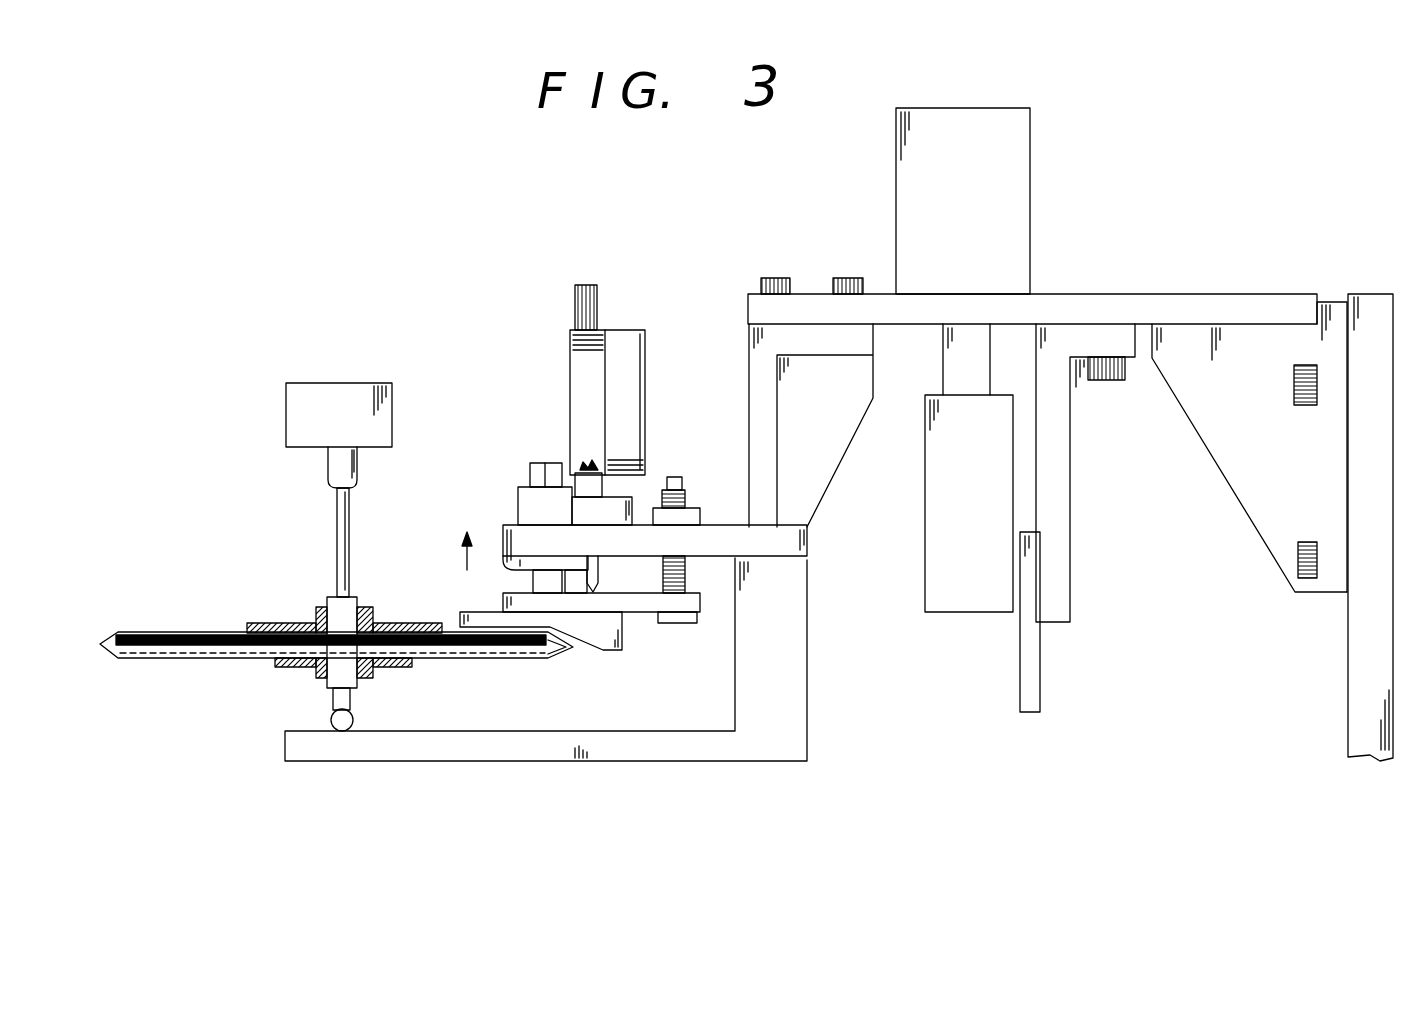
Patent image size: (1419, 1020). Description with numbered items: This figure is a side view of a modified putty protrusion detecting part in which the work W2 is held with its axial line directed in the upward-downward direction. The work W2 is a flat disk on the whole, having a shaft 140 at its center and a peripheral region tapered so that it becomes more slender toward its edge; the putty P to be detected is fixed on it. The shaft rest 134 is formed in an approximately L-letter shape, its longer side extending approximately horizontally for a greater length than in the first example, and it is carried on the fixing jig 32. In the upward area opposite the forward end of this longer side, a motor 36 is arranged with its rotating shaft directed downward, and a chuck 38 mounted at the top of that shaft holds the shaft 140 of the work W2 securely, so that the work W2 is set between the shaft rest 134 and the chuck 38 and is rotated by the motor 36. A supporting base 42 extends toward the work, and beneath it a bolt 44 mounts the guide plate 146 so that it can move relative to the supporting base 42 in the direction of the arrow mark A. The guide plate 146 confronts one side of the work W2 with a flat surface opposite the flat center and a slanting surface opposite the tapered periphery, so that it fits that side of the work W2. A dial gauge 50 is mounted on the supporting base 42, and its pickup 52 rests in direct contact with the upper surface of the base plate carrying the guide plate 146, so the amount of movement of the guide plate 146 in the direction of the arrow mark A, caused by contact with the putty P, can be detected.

The fixing jig 32 is at (808, 302).
The motor 36 is at (346, 390).
The chuck 38 is at (333, 467).
The shaft 140 is at (336, 544).
The putty P is at (120, 628).
The work W2 is at (213, 657).
The arrow mark A is at (466, 572).
The supporting base 42 is at (502, 540).
The bolt 44 is at (528, 571).
The dial gauge 50 is at (570, 363).
The pickup 52 is at (600, 580).
The guide plate 146 is at (625, 637).
The shaft rest 134 is at (747, 762).